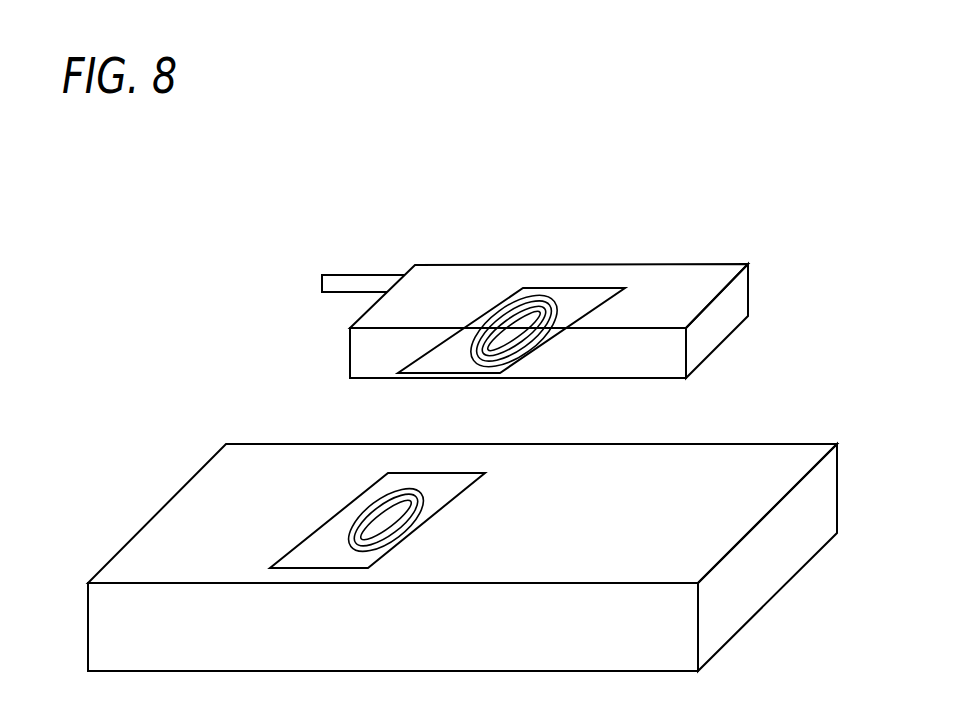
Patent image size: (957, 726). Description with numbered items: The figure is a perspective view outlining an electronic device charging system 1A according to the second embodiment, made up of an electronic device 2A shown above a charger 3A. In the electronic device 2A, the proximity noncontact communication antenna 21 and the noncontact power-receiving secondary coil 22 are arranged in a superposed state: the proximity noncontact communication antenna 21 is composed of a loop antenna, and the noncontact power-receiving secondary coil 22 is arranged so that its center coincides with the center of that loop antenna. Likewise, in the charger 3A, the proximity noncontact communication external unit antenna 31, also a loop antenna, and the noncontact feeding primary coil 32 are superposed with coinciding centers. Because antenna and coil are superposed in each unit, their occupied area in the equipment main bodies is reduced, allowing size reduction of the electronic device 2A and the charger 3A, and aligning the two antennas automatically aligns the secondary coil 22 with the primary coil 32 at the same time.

The electronic device charging system 1A is at (802, 217).
The electronic device 2A is at (620, 263).
The proximity noncontact communication antenna 21 is at (497, 303).
The noncontact power-receiving secondary coil 22 is at (548, 298).
The charger 3A is at (787, 445).
The proximity noncontact communication external unit antenna 31 is at (345, 502).
The noncontact feeding primary coil 32 is at (422, 500).